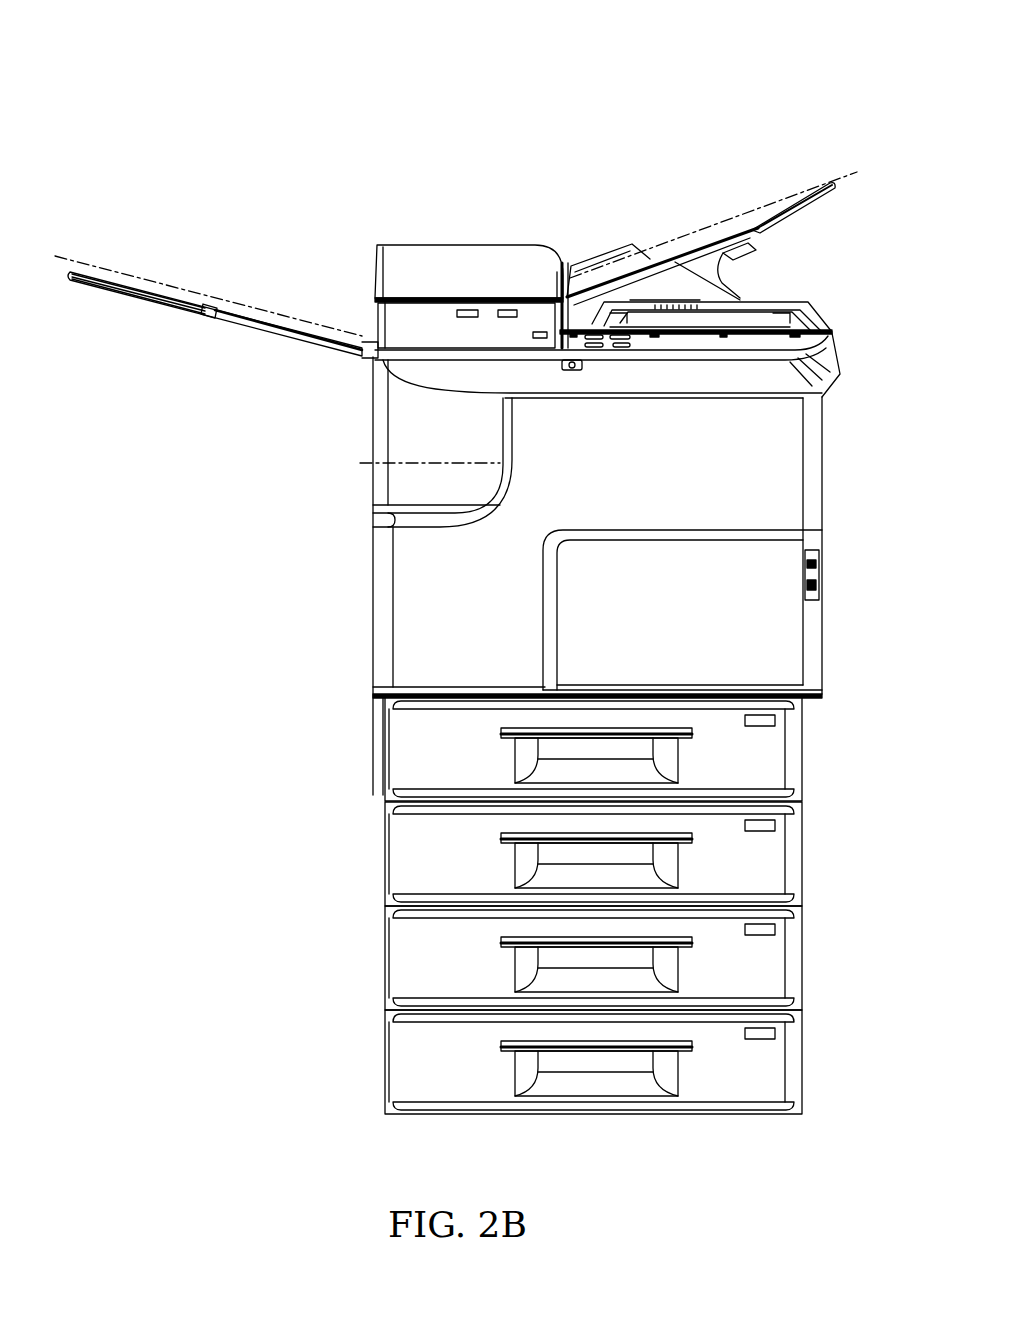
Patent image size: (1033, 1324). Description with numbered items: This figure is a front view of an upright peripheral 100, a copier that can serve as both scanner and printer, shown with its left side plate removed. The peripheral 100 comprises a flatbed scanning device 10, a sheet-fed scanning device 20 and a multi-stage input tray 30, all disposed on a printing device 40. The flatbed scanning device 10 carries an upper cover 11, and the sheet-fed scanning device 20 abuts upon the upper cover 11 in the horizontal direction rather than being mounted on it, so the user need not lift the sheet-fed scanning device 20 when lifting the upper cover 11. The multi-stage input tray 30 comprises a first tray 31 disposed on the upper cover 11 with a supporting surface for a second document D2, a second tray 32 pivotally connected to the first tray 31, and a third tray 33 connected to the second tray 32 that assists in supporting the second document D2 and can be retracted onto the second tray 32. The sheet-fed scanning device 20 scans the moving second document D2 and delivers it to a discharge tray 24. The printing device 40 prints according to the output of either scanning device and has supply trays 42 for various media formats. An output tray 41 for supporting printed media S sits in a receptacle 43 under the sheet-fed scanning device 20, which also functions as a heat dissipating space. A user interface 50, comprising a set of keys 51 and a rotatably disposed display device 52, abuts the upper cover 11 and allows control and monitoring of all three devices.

The peripheral 100 is at (487, 34).
The flatbed scanning device 10 is at (832, 322).
The upper cover 11 is at (805, 318).
The sheet-fed scanning device 20 is at (377, 244).
The discharge tray 24 is at (202, 311).
The multi-stage input tray 30 is at (157, 80).
The first tray 31 is at (672, 283).
The second tray 32 is at (705, 248).
The third tray 33 is at (790, 208).
The printing device 40 is at (824, 493).
The output tray 41 is at (427, 463).
The supply trays 42 is at (787, 757).
The receptacle 43 is at (398, 422).
The user interface 50 is at (264, 80).
The set of keys 51 is at (632, 343).
The display device 52 is at (405, 326).
The printed media S is at (362, 462).
The second document D2 is at (184, 288).